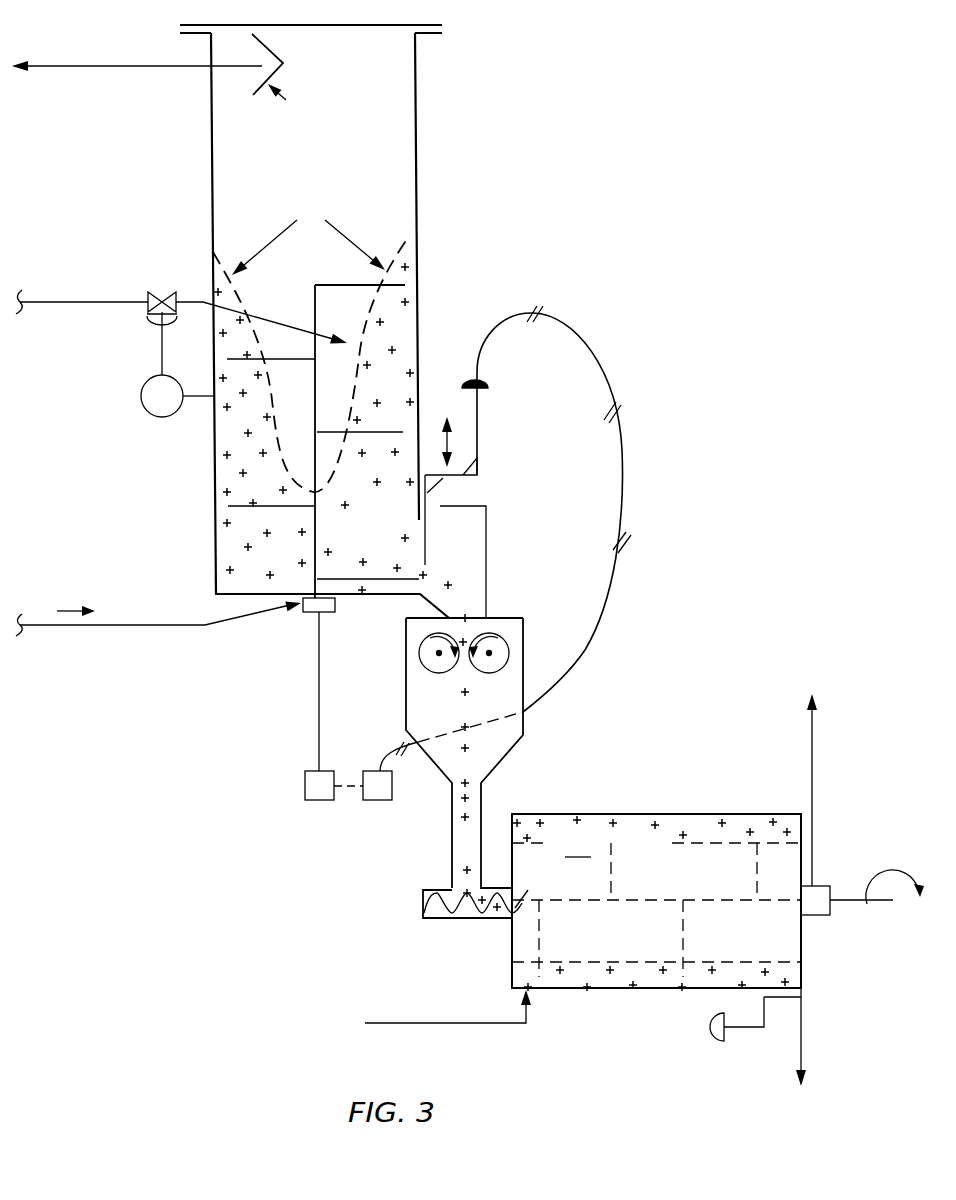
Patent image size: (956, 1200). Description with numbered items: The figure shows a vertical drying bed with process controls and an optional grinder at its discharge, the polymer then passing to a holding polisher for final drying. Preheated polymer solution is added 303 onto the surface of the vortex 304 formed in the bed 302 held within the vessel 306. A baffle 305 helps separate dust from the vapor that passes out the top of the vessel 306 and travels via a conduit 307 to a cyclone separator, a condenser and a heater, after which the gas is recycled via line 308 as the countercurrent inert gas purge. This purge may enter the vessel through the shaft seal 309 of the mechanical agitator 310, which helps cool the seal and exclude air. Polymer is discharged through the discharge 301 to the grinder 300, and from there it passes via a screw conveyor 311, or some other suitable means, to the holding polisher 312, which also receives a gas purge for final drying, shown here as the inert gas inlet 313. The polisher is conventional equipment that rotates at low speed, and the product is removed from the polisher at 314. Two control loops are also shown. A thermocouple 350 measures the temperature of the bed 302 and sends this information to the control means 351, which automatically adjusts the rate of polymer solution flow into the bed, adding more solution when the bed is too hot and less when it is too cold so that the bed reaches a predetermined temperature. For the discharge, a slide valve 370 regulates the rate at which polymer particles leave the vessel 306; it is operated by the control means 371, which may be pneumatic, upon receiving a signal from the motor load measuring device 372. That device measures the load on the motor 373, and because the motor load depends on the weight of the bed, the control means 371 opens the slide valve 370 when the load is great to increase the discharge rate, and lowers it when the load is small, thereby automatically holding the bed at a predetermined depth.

The grinder 300 is at (525, 625).
The discharge 301 is at (420, 560).
The bed 302 is at (403, 320).
The polymer solution addition 303 is at (405, 283).
The vortex 304 is at (403, 243).
The baffle 305 is at (285, 62).
The vessel 306 is at (419, 116).
The conduit 307 is at (108, 68).
The recycle line 308 is at (120, 628).
The shaft seal 309 is at (305, 614).
The mechanical agitator 310 is at (320, 528).
The screw conveyor 311 is at (440, 922).
The holding polisher 312 is at (632, 995).
The inert gas inlet 313 is at (450, 1030).
The product removal point 314 is at (801, 1033).
The thermocouple 350 is at (213, 398).
The control means 351 is at (140, 397).
The slide valve 370 is at (427, 497).
The control means 371 is at (488, 385).
The motor load measuring device 372 is at (380, 803).
The motor 373 is at (320, 803).